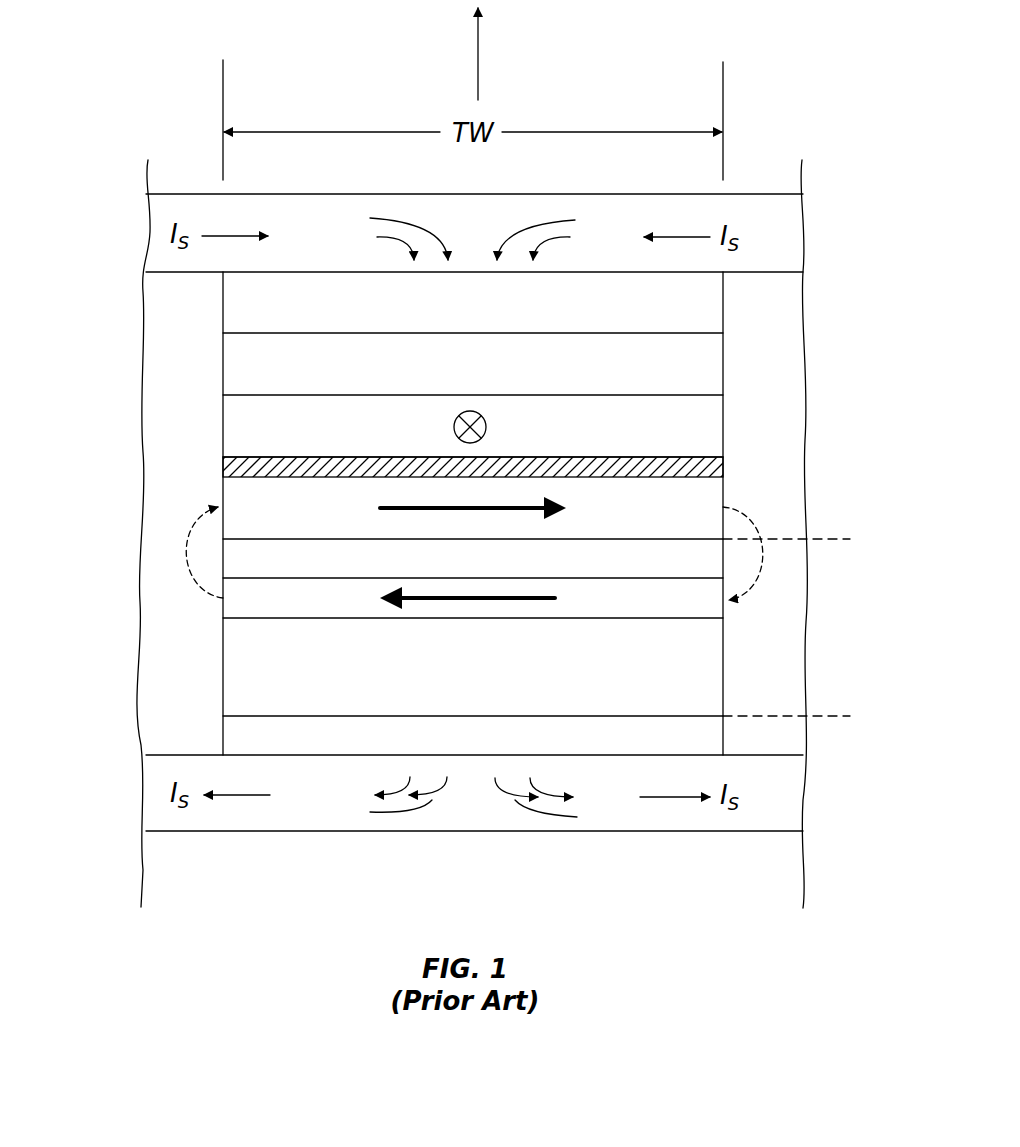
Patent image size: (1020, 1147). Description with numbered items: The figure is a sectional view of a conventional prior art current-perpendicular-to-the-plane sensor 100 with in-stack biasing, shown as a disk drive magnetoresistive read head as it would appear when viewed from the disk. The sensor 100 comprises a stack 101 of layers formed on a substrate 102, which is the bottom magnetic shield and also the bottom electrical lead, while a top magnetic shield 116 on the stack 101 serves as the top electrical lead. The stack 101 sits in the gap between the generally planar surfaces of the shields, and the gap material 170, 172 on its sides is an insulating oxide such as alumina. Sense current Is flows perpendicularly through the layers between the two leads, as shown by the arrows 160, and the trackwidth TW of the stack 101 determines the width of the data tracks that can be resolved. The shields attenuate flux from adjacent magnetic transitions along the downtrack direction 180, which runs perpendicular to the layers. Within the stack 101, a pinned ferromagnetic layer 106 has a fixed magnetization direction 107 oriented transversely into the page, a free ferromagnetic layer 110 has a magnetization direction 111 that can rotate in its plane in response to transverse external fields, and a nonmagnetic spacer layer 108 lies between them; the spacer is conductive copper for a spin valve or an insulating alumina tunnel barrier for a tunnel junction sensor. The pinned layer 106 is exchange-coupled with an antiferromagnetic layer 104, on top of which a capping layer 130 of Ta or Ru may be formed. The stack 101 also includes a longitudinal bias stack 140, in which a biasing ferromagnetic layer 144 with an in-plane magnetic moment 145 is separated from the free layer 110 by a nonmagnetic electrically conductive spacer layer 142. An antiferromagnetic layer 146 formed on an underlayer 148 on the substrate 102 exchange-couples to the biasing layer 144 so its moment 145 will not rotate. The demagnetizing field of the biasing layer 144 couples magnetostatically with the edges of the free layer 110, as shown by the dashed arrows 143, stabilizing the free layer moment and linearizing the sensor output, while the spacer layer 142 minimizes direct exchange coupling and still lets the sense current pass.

The CPP sensor 100 is at (187, 137).
The sensor stack 101 is at (123, 270).
The substrate 102 is at (790, 792).
The antiferromagnetic layer 104 is at (716, 378).
The pinned ferromagnetic layer 106 is at (716, 438).
The magnetization direction 107 is at (487, 424).
The nonmagnetic spacer layer 108 is at (234, 469).
The free ferromagnetic layer 110 is at (716, 524).
The magnetization direction 111 is at (389, 507).
The top magnetic shield 116 is at (786, 228).
The capping layer 130 is at (716, 318).
The longitudinal bias stack 140 is at (850, 539).
The nonmagnetic electrically conductive spacer layer 142 is at (716, 573).
The dashed arrows 143 is at (204, 600).
The biasing ferromagnetic layer 144 is at (716, 613).
The in-plane magnetic moment 145 is at (560, 603).
The antiferromagnetic layer 146 is at (716, 681).
The underlayer 148 is at (716, 753).
The arrows 160 is at (472, 519).
The gap material 170 is at (207, 378).
The gap material 172 is at (785, 378).
The downtrack direction 180 is at (478, 60).